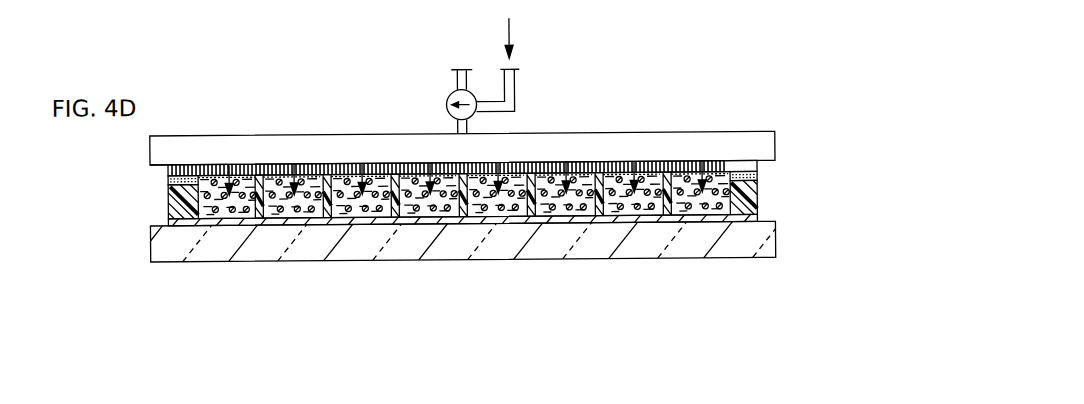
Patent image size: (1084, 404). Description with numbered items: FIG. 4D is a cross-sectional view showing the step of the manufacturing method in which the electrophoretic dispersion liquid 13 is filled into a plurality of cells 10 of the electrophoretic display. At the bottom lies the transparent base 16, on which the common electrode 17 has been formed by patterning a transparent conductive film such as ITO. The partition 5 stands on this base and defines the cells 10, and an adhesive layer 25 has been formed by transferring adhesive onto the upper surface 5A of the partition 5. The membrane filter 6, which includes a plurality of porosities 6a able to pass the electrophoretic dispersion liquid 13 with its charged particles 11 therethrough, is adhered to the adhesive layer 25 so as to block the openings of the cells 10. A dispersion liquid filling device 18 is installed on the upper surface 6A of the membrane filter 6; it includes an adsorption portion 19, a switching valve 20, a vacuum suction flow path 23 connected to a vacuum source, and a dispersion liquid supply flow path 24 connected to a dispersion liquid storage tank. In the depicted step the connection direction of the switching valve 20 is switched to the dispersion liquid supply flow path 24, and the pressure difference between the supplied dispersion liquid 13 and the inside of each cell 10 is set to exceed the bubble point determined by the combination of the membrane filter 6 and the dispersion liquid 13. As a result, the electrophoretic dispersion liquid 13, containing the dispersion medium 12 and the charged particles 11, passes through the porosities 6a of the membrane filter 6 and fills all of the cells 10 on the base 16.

The partition 5 is at (507, 251).
The upper surface of the partition 5A is at (178, 200).
The membrane filter 6 is at (758, 166).
The porosities 6a is at (240, 167).
The upper surface of the membrane filter 6A is at (170, 166).
The cells 10 is at (287, 227).
The charged particles 11 is at (347, 213).
The dispersion medium 12 is at (378, 210).
The electrophoretic dispersion liquid 13 is at (464, 261).
The transparent base 16 is at (767, 241).
The common electrode 17 is at (760, 223).
The dispersion liquid filling device 18 is at (462, 90).
The adsorption portion 19 is at (333, 148).
The switching valve 20 is at (447, 107).
The vacuum suction flow path 23 is at (457, 77).
The dispersion liquid supply flow path 24 is at (518, 79).
The adhesive layer 25 is at (760, 181).